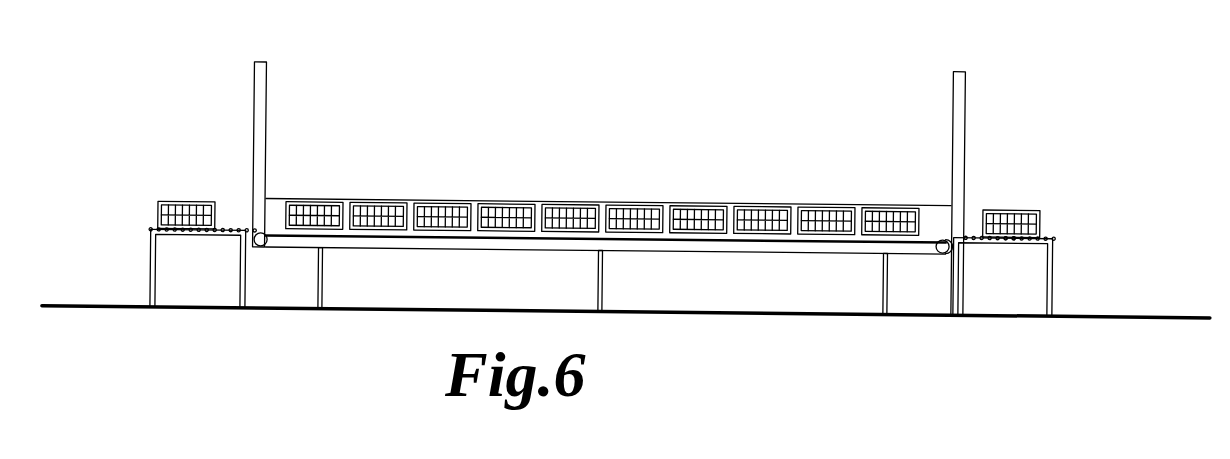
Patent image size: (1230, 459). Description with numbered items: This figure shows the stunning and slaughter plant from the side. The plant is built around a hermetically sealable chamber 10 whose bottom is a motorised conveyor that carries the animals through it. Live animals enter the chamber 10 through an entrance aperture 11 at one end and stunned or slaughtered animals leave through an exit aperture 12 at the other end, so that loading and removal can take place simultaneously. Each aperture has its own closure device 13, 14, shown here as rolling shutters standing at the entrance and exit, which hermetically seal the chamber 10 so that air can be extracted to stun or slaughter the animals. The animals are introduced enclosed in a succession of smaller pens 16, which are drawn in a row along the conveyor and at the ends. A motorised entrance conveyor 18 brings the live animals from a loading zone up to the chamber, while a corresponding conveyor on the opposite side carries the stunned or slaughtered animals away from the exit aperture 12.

The hermetically sealable chamber 10 is at (609, 197).
The entrance aperture 11 is at (241, 207).
The exit aperture 12 is at (962, 227).
The closure device 13 is at (264, 110).
The closure device 14 is at (951, 117).
The smaller pens 16 is at (445, 200).
The motorised entrance conveyor 18 is at (200, 237).